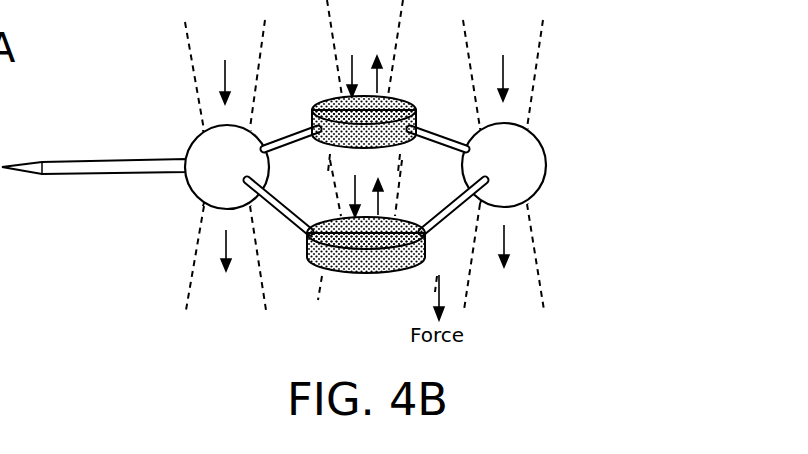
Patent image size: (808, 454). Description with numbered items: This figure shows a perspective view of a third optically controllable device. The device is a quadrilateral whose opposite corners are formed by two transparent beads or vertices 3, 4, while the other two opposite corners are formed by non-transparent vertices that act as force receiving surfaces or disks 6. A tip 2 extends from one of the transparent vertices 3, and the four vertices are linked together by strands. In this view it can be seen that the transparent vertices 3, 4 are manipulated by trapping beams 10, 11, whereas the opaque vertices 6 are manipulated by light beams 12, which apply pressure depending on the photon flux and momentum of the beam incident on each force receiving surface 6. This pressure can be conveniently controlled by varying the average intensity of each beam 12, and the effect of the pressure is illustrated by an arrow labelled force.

The tip 2 is at (84, 170).
The transparent bead or vertex 3 is at (192, 190).
The transparent bead or vertex 4 is at (538, 188).
The force receiving surface or disk 6 is at (406, 98).
The trapping beam 10 is at (187, 40).
The trapping beam 11 is at (540, 38).
The light beam 12 is at (324, 44).